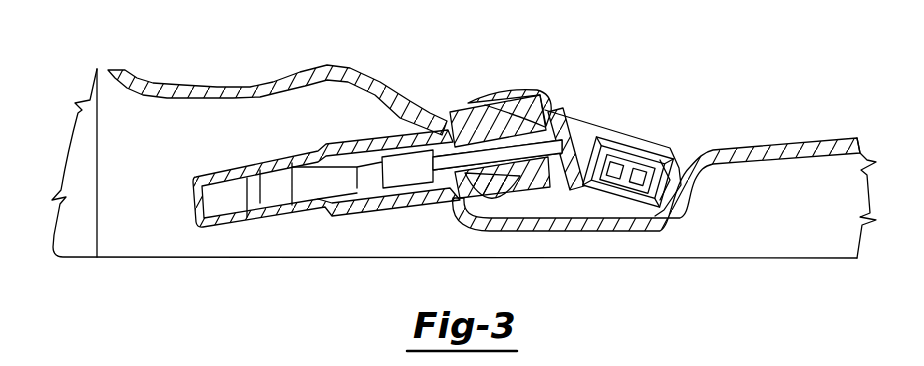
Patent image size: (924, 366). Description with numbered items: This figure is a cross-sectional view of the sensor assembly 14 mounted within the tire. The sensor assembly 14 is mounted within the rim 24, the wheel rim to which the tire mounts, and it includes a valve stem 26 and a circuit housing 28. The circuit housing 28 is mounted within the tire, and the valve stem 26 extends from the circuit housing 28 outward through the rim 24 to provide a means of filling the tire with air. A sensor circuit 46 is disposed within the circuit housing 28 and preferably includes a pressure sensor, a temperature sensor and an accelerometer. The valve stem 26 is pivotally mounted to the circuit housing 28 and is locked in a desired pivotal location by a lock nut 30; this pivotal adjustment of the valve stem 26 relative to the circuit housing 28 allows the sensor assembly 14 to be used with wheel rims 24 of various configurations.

The sensor assembly 14 is at (456, 98).
The rim 24 is at (782, 150).
The valve stem 26 is at (267, 173).
The circuit housing 28 is at (580, 130).
The lock nut 30 is at (541, 120).
The sensor circuit 46 is at (640, 173).